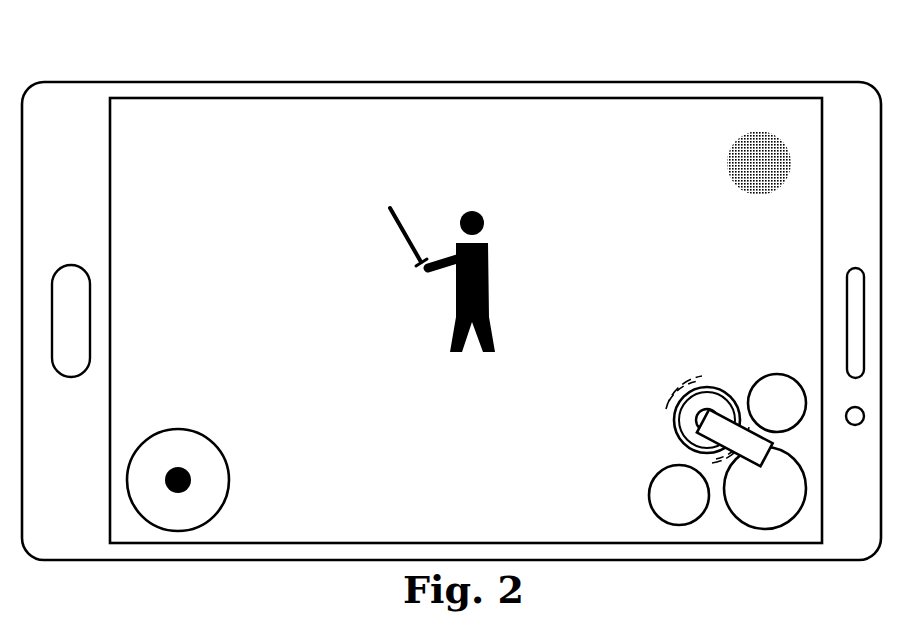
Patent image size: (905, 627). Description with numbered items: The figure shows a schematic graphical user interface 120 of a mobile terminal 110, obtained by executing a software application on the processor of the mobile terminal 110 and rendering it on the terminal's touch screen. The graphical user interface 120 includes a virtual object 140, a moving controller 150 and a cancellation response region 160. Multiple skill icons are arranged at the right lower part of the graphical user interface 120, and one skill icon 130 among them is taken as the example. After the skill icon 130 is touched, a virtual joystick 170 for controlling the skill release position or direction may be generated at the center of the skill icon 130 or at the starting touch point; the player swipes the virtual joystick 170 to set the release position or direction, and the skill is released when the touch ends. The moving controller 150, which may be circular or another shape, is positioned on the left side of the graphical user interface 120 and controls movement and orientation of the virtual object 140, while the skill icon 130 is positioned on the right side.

The mobile terminal 110 is at (125, 82).
The graphical user interface 120 is at (561, 97).
The skill icon 130 is at (677, 393).
The virtual object 140 is at (427, 270).
The moving controller 150 is at (230, 473).
The cancellation response region 160 is at (728, 160).
The virtual joystick 170 is at (720, 380).